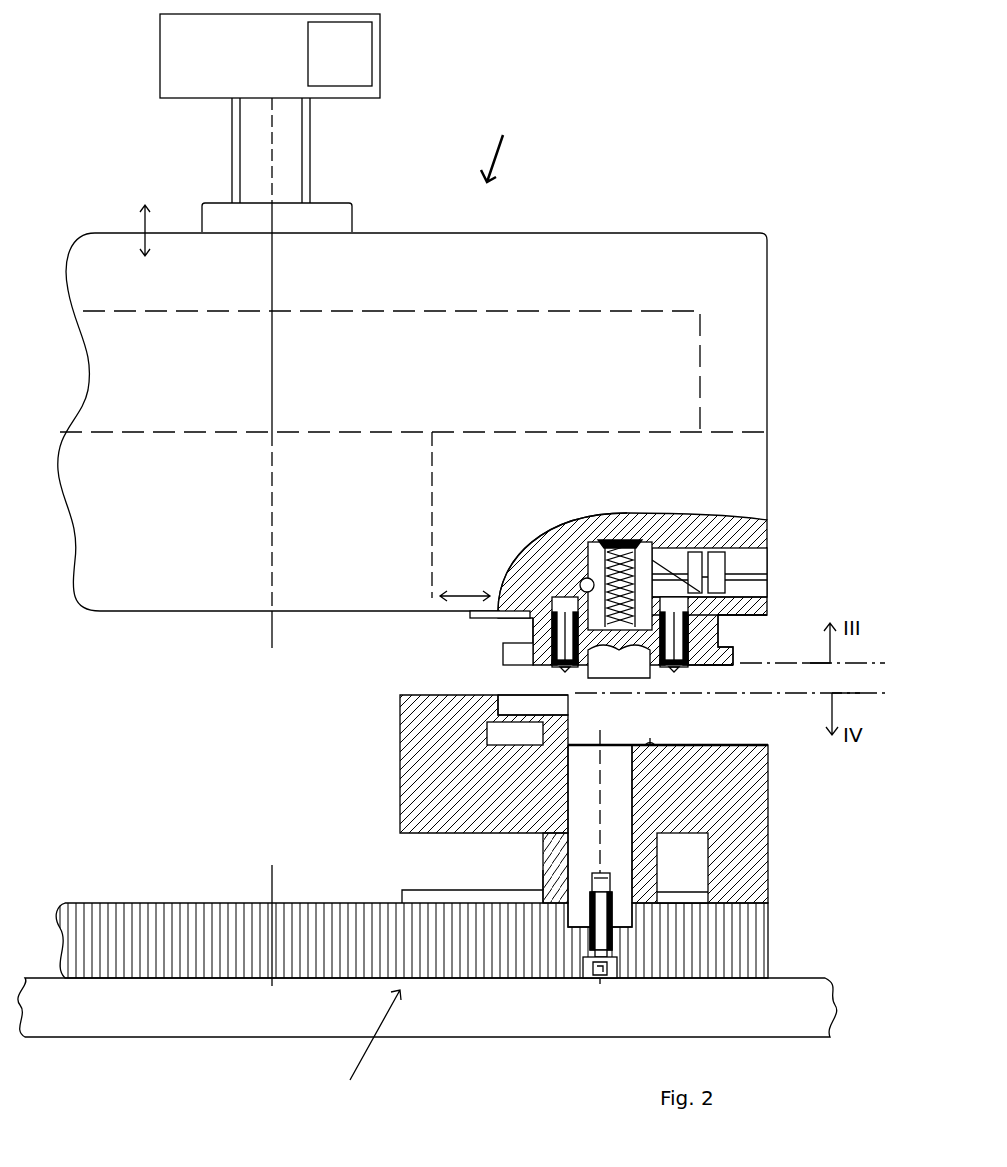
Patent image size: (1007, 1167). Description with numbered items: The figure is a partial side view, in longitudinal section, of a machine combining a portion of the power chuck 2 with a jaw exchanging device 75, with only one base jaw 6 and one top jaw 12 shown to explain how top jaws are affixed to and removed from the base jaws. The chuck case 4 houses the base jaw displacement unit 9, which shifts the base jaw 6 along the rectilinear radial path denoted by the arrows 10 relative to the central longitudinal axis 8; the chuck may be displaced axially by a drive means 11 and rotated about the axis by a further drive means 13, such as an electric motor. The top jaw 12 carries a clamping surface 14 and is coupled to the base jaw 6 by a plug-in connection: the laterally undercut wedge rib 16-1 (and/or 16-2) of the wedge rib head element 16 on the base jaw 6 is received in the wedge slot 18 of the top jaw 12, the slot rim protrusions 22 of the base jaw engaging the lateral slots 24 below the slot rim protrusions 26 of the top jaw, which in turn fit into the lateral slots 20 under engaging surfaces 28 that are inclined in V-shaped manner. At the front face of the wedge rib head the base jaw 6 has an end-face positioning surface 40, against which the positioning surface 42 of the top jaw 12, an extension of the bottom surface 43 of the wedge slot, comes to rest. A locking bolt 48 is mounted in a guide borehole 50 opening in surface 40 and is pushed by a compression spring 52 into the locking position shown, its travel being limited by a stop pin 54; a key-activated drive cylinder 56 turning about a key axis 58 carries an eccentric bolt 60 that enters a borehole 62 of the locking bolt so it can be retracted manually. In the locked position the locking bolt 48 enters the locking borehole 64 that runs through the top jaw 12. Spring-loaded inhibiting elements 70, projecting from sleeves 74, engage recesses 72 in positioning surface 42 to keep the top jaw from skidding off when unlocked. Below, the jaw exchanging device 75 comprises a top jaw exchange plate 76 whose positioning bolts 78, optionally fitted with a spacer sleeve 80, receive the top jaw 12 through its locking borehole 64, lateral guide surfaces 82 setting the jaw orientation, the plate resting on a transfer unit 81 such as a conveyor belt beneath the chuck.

The power chuck 2 is at (497, 143).
The chuck case 4 is at (547, 262).
The base jaw 6 is at (740, 545).
The central longitudinal axis 8 is at (272, 622).
The base jaw displacement unit 9 is at (669, 378).
The arrows 10 is at (490, 590).
The drive means 11 is at (180, 48).
The top jaw 12 is at (760, 812).
The drive means 13 is at (343, 52).
The clamping surface 14 is at (703, 850).
The wedge rib 16 is at (738, 665).
The wedge rib 16-1 is at (505, 665).
The wedge rib 16-2 is at (735, 658).
The wedge slot 18 is at (520, 707).
The lateral slot 20 is at (495, 626).
The slot rim protrusion 22 is at (500, 657).
The lateral slot 24 is at (537, 735).
The slot rim protrusion 26 is at (555, 705).
The engaging surface 28 is at (512, 649).
The end-face positioning surface 40 is at (716, 668).
The end-face positioning surface 42 is at (715, 745).
The bottom surface 43 is at (495, 731).
The locking bolt 48 is at (583, 553).
The guide borehole 50 is at (655, 547).
The compression spring 52 is at (600, 540).
The stop pin 54 is at (581, 583).
The drive cylinder 56 is at (717, 568).
The key axis 58 is at (740, 578).
The bolt 60 is at (740, 612).
The borehole 62 is at (652, 572).
The locking borehole 64 is at (555, 852).
The inhibiting element 70 is at (672, 672).
The recess 72 is at (656, 745).
The sleeve 74 is at (690, 665).
The jaw exchanging device 75 is at (367, 1050).
The top jaw exchange plate 76 is at (205, 965).
The positioning bolt 78 is at (543, 878).
The spacer sleeve 80 is at (586, 960).
The transfer unit 81 is at (258, 1010).
The lateral guide surface 82 is at (412, 893).